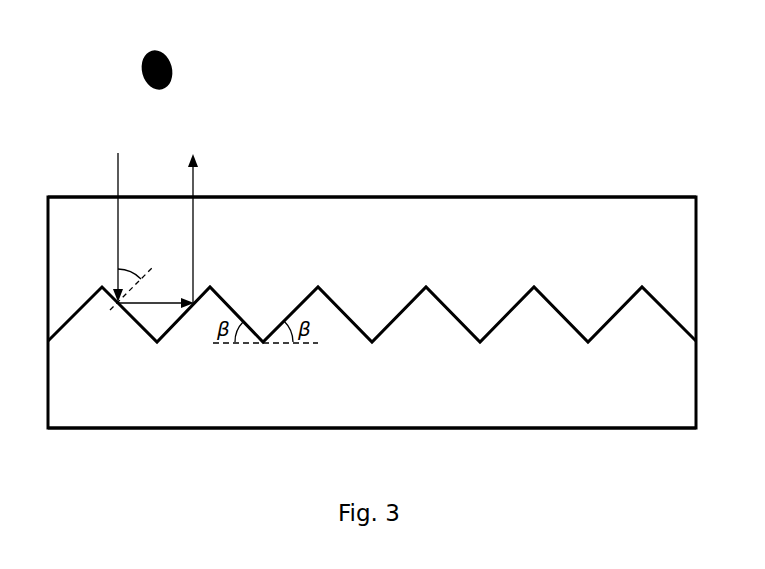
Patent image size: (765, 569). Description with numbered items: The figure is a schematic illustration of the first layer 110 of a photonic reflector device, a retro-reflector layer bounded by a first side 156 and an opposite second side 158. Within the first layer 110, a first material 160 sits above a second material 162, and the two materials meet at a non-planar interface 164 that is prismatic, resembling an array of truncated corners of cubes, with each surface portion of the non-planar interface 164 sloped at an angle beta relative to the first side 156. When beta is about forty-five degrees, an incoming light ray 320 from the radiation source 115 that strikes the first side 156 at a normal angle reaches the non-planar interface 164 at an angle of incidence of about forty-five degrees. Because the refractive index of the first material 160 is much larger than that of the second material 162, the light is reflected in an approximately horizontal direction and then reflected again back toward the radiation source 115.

The first layer 110 is at (540, 182).
The radiation source 115 is at (172, 60).
The first side 156 is at (375, 195).
The second side 158 is at (443, 423).
The first material 160 is at (628, 263).
The second material 162 is at (628, 400).
The non-planar interface 164 is at (447, 305).
The incoming light ray 320 is at (115, 172).